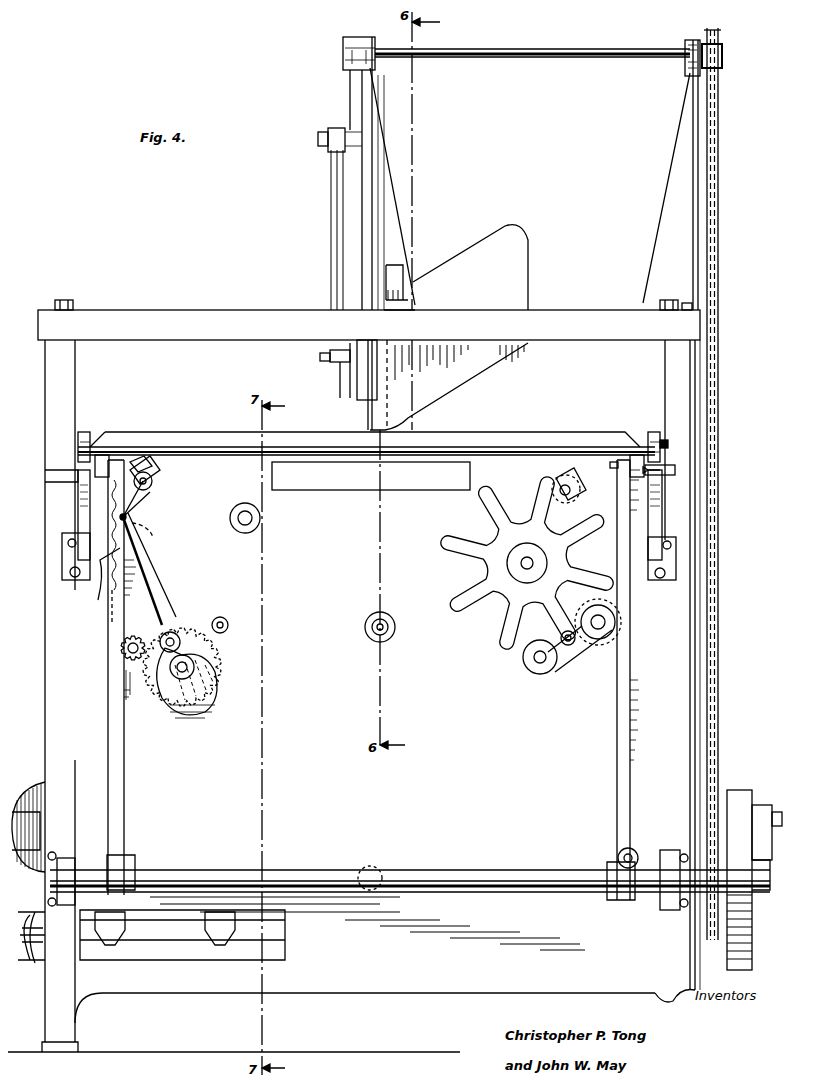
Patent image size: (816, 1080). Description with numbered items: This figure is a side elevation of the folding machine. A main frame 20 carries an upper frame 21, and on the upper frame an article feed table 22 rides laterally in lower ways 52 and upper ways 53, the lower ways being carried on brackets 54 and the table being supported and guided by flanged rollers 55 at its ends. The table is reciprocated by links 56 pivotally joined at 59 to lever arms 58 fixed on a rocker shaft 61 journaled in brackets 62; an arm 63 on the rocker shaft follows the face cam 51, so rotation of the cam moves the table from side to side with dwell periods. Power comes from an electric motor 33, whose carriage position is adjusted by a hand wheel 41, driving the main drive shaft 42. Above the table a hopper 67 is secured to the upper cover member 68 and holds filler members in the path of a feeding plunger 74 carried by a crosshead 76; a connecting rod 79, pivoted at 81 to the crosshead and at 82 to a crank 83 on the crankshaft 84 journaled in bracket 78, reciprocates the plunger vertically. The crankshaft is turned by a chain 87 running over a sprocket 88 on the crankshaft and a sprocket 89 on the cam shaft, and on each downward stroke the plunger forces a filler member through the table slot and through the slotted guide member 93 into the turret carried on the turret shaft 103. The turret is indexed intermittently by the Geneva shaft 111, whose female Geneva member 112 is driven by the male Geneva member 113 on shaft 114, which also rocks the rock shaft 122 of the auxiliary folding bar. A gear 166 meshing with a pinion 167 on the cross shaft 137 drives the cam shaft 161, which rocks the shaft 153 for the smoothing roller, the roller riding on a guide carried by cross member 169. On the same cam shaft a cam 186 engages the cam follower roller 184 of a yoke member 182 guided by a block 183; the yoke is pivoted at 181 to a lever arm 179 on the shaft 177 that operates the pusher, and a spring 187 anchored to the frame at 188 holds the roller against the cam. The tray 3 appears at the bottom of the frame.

The tray 3 is at (180, 945).
The main frame 20 is at (685, 568).
The upper frame 21 is at (680, 396).
The article feed table 22 is at (548, 448).
The electric motor 33 is at (30, 790).
The hand wheel 41 is at (28, 963).
The main drive shaft 42 is at (378, 870).
The face cam 51 is at (752, 965).
The lower ways 52 is at (675, 470).
The upper ways 53 is at (668, 444).
The brackets 54 is at (78, 510).
The flanged rollers 55 is at (78, 458).
The links 56 is at (100, 455).
The lever arms 58 is at (108, 706).
The pivot 59 is at (140, 458).
The rocker shaft 61 is at (512, 892).
The brackets 62 is at (57, 893).
The arm 63 is at (775, 838).
The hopper 67 is at (470, 245).
The upper cover member 68 is at (583, 318).
The feeding plunger 74 is at (368, 420).
The crosshead 76 is at (357, 382).
The bracket 78 is at (395, 235).
The connecting rod 79 is at (331, 210).
The pivot 81 is at (320, 360).
The pivot 82 is at (318, 140).
The crank 83 is at (345, 85).
The crankshaft 84 is at (500, 50).
The chain 87 is at (718, 212).
The sprocket 88 is at (722, 62).
The sprocket 89 is at (712, 930).
The guide member 93 is at (332, 482).
The turret shaft 103 is at (385, 632).
The Geneva shaft 111 is at (520, 563).
The female Geneva member 112 is at (490, 612).
The male Geneva member 113 is at (560, 665).
The shaft 114 is at (600, 632).
The rock shaft 122 is at (553, 488).
The cross shaft 137 is at (130, 700).
The shaft 153 is at (238, 530).
The cam shaft 161 is at (194, 667).
The gear 166 is at (212, 648).
The pinion 167 is at (121, 648).
The cross member 169 is at (225, 618).
The shaft 177 is at (152, 488).
The lever arm 179 is at (140, 508).
The pivot 181 is at (155, 538).
The yoke member 182 is at (165, 580).
The block 183 is at (190, 720).
The cam follower roller 184 is at (175, 636).
The cam 186 is at (215, 705).
The spring 187 is at (96, 610).
The frame anchor 188 is at (108, 625).